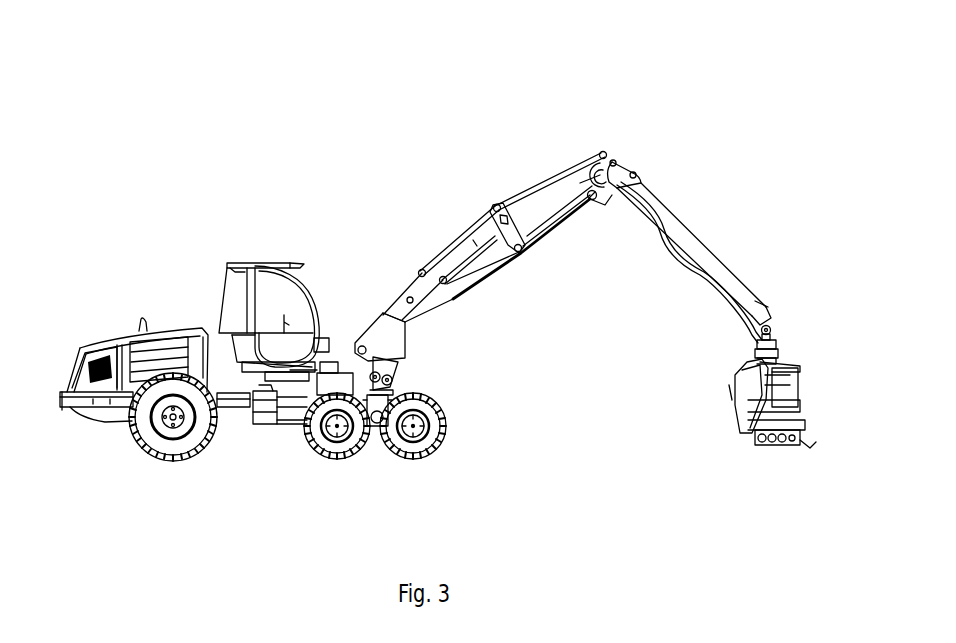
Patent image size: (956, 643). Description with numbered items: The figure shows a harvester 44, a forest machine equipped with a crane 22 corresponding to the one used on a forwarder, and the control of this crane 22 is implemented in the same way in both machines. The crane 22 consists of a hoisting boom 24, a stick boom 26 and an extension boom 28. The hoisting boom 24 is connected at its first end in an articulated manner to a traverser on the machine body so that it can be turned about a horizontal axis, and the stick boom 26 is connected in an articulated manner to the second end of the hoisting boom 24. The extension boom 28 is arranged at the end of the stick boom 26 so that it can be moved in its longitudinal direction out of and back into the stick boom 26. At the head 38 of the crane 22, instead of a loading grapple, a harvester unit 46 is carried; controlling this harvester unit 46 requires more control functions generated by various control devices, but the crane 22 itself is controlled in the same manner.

The crane 22 is at (619, 201).
The hoisting boom 24 is at (538, 226).
The stick boom 26 is at (695, 232).
The extension boom 28 is at (762, 303).
The head 38 is at (773, 330).
The harvester 44 is at (288, 222).
The harvester unit 46 is at (716, 434).